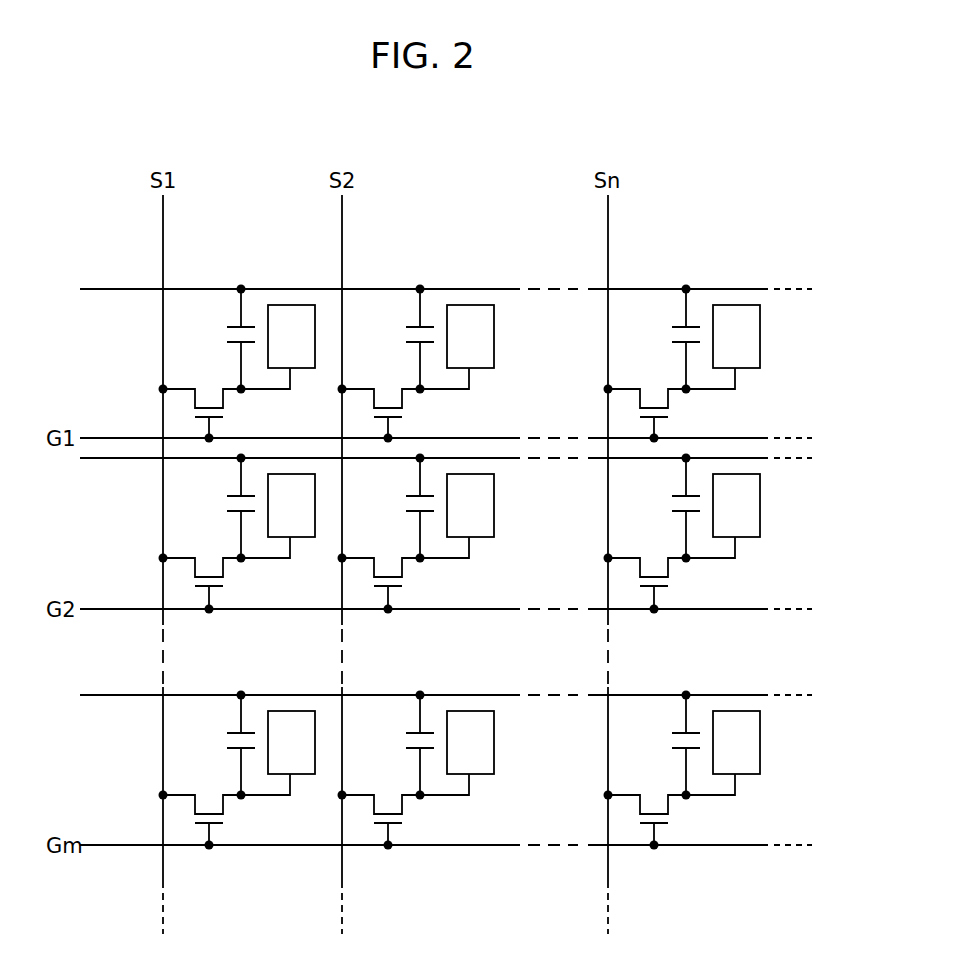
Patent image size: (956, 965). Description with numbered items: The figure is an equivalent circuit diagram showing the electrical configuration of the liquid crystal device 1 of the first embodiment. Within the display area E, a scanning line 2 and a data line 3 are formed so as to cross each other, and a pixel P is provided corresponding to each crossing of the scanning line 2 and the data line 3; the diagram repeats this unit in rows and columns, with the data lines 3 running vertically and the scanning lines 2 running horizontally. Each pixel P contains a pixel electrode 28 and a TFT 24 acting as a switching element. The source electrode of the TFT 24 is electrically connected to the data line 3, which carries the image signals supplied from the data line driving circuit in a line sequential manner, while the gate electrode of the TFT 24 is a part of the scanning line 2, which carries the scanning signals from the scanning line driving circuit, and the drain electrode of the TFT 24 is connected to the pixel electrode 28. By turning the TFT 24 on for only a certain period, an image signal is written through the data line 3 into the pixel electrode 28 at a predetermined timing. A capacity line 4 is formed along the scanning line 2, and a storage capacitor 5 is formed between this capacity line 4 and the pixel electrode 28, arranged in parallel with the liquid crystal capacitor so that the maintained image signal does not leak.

The electro-optical device (display device) 1 is at (760, 80).
The display area E is at (680, 140).
The pixel P is at (182, 313).
The scanning line 2 is at (760, 438).
The data line 3 is at (163, 262).
The capacity line 4 is at (758, 289).
The storage capacitor 5 is at (222, 343).
The TFT 24 is at (235, 410).
The pixel electrode 28 is at (286, 313).